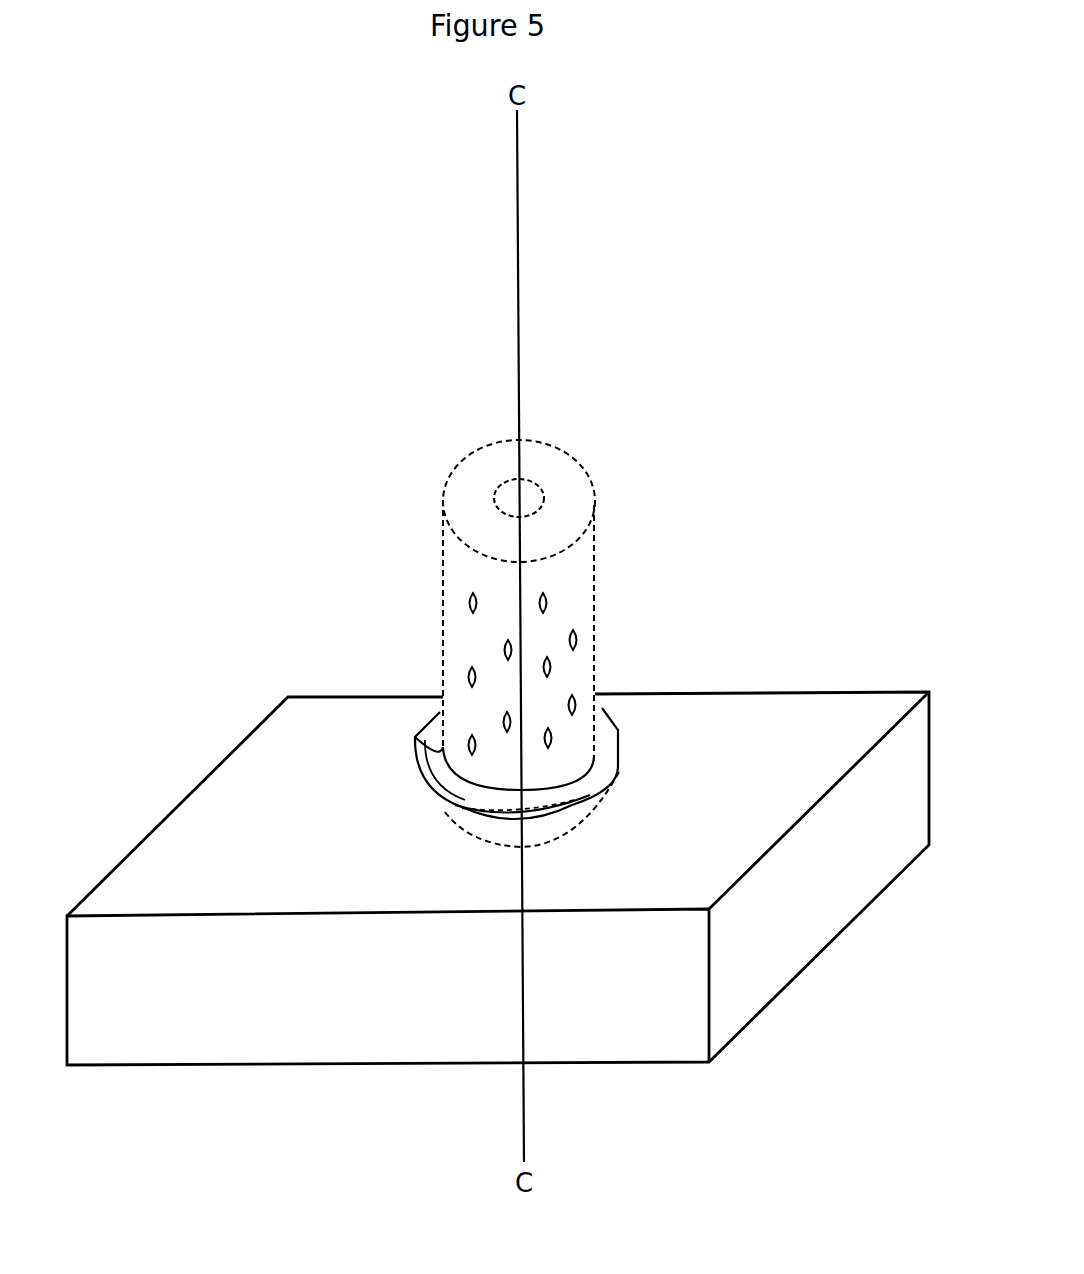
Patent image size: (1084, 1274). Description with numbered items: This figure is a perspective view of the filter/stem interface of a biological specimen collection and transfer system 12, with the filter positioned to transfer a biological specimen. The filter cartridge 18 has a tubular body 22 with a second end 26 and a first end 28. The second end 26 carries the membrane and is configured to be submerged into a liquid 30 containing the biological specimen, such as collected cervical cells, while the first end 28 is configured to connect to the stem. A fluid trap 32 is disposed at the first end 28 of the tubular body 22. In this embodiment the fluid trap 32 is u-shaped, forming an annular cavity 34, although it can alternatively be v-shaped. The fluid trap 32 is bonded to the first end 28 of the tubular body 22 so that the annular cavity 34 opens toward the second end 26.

The biological specimen collection and transfer system 12 is at (378, 1112).
The filter cartridge 18 is at (578, 587).
The tubular body 22 is at (471, 636).
The second end 26 is at (432, 518).
The first end 28 is at (400, 775).
The liquid 30 is at (593, 623).
The fluid trap 32 is at (620, 750).
The annular cavity 34 is at (430, 737).